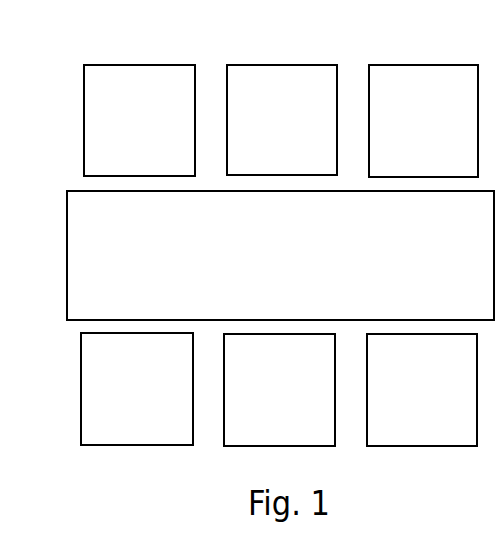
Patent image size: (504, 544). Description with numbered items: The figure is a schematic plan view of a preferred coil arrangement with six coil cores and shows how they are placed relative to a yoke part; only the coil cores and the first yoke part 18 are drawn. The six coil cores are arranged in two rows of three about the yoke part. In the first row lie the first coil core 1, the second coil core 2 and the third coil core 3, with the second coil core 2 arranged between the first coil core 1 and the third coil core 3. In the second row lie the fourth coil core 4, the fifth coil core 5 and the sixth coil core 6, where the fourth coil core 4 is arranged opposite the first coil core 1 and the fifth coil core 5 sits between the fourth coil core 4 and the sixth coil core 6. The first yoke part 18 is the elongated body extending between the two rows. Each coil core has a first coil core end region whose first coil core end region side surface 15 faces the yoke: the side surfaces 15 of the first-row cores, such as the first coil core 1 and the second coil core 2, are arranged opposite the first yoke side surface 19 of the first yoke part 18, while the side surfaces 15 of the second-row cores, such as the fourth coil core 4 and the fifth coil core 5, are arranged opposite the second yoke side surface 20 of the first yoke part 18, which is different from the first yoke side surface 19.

The first coil core 1 is at (131, 146).
The second coil core 2 is at (272, 146).
The third coil core 3 is at (415, 146).
The fourth coil core 4 is at (129, 414).
The fifth coil core 5 is at (271, 414).
The sixth coil core 6 is at (414, 414).
The first coil core end region side surface 15 is at (96, 178).
The first yoke part 18 is at (366, 269).
The first yoke side surface 19 is at (200, 191).
The second yoke side surface 20 is at (201, 326).